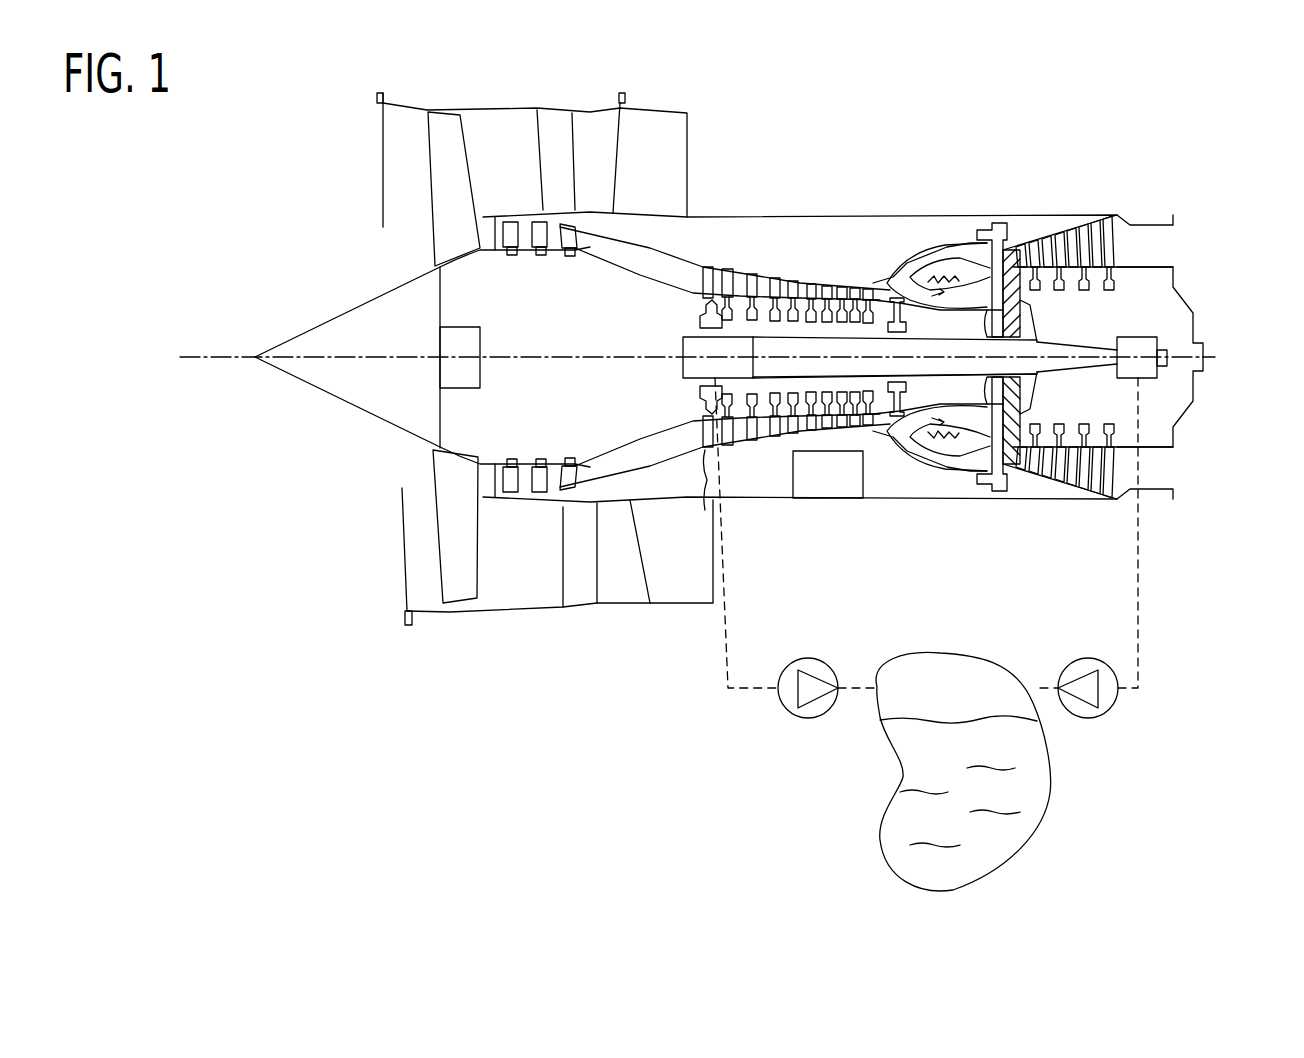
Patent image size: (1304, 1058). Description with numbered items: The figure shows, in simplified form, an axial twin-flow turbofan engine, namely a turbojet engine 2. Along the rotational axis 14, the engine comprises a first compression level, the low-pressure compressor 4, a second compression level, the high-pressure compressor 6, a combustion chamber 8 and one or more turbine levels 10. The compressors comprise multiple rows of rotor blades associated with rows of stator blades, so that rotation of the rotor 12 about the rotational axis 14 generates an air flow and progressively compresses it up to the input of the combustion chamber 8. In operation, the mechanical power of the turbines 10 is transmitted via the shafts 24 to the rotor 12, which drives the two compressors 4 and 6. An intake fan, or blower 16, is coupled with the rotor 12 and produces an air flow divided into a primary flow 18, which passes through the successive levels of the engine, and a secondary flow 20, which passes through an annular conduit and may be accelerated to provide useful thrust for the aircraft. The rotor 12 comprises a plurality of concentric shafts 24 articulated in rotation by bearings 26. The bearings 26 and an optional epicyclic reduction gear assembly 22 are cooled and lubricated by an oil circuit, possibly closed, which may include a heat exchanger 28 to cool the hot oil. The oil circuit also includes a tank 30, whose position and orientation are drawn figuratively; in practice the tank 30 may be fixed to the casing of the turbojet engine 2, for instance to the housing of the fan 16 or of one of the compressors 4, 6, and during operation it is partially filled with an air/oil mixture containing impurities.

The turbojet engine 2 is at (135, 325).
The low-pressure compressor 4 is at (510, 257).
The high-pressure compressor 6 is at (777, 280).
The combustion chamber 8 is at (950, 245).
The turbine levels 10 is at (1088, 218).
The rotor 12 is at (1043, 340).
The rotational axis 14 is at (587, 356).
The fan 16 is at (450, 182).
The primary flow 18 is at (590, 238).
The secondary flow 20 is at (705, 153).
The epicyclic reduction gear assembly 22 is at (463, 373).
The shafts 24 is at (887, 352).
The bearings 26 is at (690, 367).
The heat exchanger 28 is at (838, 487).
The tank 30 is at (1015, 828).